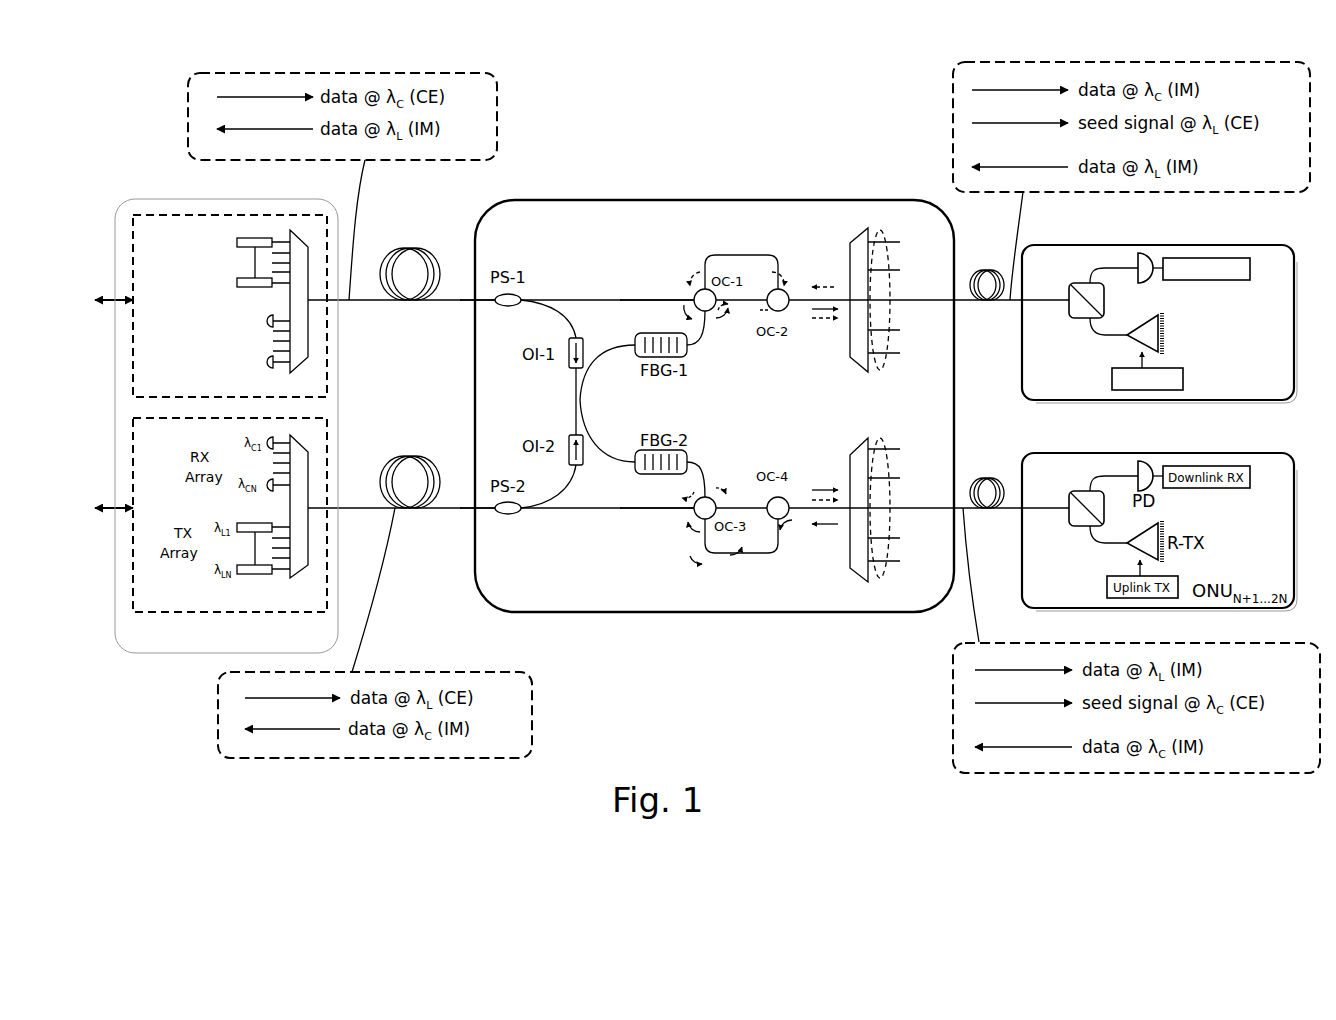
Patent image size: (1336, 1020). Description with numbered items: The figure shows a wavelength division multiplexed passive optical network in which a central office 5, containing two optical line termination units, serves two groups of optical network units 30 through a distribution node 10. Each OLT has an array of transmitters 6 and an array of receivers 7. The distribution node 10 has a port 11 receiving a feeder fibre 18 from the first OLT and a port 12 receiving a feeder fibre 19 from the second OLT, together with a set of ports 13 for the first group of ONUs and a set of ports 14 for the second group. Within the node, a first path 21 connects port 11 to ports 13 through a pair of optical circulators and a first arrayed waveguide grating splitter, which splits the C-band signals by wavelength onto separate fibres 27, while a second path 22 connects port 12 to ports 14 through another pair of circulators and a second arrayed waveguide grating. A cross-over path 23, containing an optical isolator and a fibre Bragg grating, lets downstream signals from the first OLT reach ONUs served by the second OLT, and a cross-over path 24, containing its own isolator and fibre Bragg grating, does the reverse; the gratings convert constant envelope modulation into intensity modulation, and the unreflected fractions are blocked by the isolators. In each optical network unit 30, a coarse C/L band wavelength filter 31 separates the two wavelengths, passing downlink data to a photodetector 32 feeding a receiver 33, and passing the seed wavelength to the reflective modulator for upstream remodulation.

The central office 5 is at (134, 199).
The array of transmitters 6 is at (180, 240).
The array of receivers 7 is at (185, 340).
The distribution node 10 is at (703, 200).
The port 11 is at (476, 300).
The port 12 is at (475, 508).
The set of ports 13 is at (880, 242).
The set of ports 14 is at (880, 572).
The feeder fibre 18 is at (414, 247).
The feeder fibre 19 is at (410, 456).
The first path 21 is at (653, 300).
The second path 22 is at (652, 508).
The cross-over path 23 is at (617, 460).
The cross-over path 24 is at (617, 347).
The fibre 27 is at (985, 270).
The optical network unit 30 is at (1175, 303).
The wavelength filter 31 is at (1086, 283).
The photodetector 32 is at (1140, 258).
The receiver 33 is at (1207, 258).